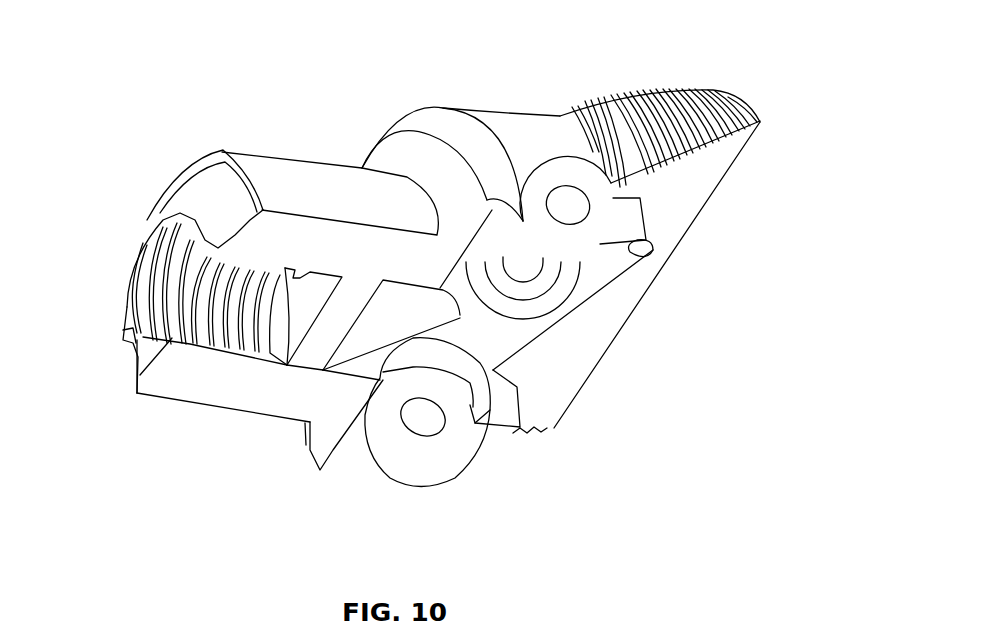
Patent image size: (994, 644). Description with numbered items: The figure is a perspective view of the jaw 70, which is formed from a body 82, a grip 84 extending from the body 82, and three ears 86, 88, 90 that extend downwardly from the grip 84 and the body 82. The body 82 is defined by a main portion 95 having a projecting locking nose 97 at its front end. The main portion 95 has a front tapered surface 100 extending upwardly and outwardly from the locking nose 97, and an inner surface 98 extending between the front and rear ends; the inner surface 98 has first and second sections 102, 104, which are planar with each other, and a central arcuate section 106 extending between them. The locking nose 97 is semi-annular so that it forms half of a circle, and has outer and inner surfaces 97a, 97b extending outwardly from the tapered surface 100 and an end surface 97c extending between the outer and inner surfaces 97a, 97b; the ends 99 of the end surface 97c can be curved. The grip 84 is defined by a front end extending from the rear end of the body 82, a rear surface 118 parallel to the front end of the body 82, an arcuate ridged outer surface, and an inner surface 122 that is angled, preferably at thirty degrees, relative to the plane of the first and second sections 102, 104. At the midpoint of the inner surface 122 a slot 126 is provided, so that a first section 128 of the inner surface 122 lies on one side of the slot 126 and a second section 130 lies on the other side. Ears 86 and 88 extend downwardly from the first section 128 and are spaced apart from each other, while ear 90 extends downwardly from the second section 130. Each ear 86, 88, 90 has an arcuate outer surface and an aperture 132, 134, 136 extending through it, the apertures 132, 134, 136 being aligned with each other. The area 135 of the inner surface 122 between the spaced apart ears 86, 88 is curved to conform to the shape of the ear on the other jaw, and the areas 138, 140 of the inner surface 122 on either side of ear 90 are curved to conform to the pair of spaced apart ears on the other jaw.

The jaw 70 is at (486, 284).
The body 82 is at (397, 122).
The grip 84 is at (650, 110).
The ear 86 is at (577, 237).
The ear 88 is at (540, 330).
The ear 90 is at (403, 480).
The main portion 95 is at (340, 190).
The locking nose 97 is at (162, 254).
The outer surface of locking nose 97a is at (190, 232).
The inner surface of locking nose 97b is at (150, 243).
The end surface of locking nose 97c is at (127, 287).
The inner surface 98 is at (173, 333).
The ends of end surface 99 is at (185, 240).
The front tapered surface 100 is at (218, 173).
The first section 102 is at (225, 392).
The second section 104 is at (300, 220).
The central arcuate section 106 is at (197, 303).
The rear surface 118 is at (733, 163).
The inner surface 122 is at (633, 319).
The slot 126 is at (590, 313).
The first section 128 is at (658, 207).
The second section 130 is at (540, 423).
The aperture 132 is at (567, 207).
The aperture 134 is at (523, 273).
The area of inner surface 135 is at (480, 253).
The aperture 136 is at (427, 420).
The area of inner surface 138 is at (467, 373).
The area of inner surface 140 is at (337, 457).